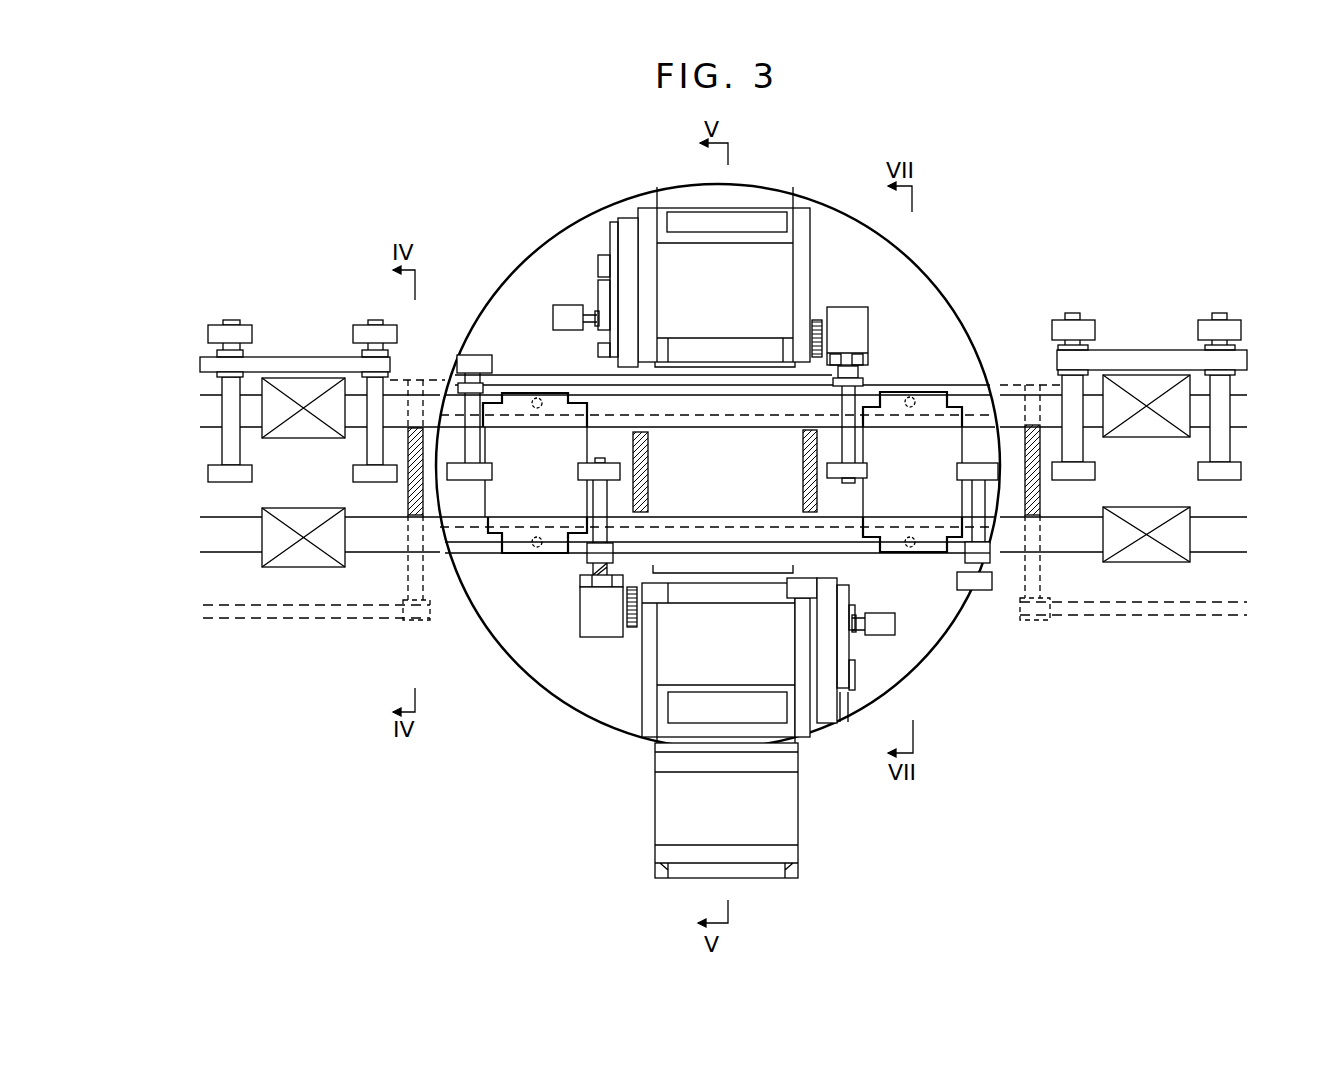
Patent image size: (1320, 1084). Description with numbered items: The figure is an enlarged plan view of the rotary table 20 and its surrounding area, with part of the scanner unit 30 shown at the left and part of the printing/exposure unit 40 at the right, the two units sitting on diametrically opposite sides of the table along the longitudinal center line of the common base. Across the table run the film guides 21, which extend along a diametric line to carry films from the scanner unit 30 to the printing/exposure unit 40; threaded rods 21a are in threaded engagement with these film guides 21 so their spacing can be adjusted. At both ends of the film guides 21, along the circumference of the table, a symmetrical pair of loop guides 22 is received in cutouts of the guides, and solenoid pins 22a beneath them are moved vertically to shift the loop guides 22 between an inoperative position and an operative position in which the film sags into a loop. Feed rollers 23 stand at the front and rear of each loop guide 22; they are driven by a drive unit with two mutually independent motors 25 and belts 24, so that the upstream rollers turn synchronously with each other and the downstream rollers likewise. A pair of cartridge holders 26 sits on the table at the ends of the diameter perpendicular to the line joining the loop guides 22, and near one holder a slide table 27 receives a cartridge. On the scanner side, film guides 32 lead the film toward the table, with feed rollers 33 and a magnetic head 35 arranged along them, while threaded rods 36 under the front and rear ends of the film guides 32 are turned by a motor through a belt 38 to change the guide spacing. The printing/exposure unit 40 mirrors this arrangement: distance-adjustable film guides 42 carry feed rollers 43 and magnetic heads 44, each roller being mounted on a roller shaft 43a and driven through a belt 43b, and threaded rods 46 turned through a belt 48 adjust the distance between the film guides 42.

The rotary table 20 is at (535, 228).
The film guides 21 is at (668, 425).
The threaded rods 21a is at (803, 438).
The loop guides 22 is at (910, 427).
The solenoid pins 22a is at (910, 400).
The feed rollers 23 is at (582, 463).
The belts 24 is at (580, 578).
The motors 25 is at (592, 628).
The cartridge holders 26 is at (662, 652).
The slide table 27 is at (778, 817).
The scanner unit 30 is at (253, 312).
The film guides 32 is at (217, 535).
The feed rollers 33 is at (363, 473).
The magnetic head 35 is at (302, 558).
The threaded rods 36 is at (407, 497).
The belt 38 is at (330, 615).
The printing/exposure unit 40 is at (1182, 300).
The film guides 42 is at (1078, 537).
The feed rollers 43 is at (1090, 470).
The roller shaft 43a is at (1072, 415).
The belt 43b is at (1140, 355).
The magnetic heads 44 is at (1152, 555).
The threaded rods 46 is at (1020, 585).
The belt 48 is at (1218, 612).